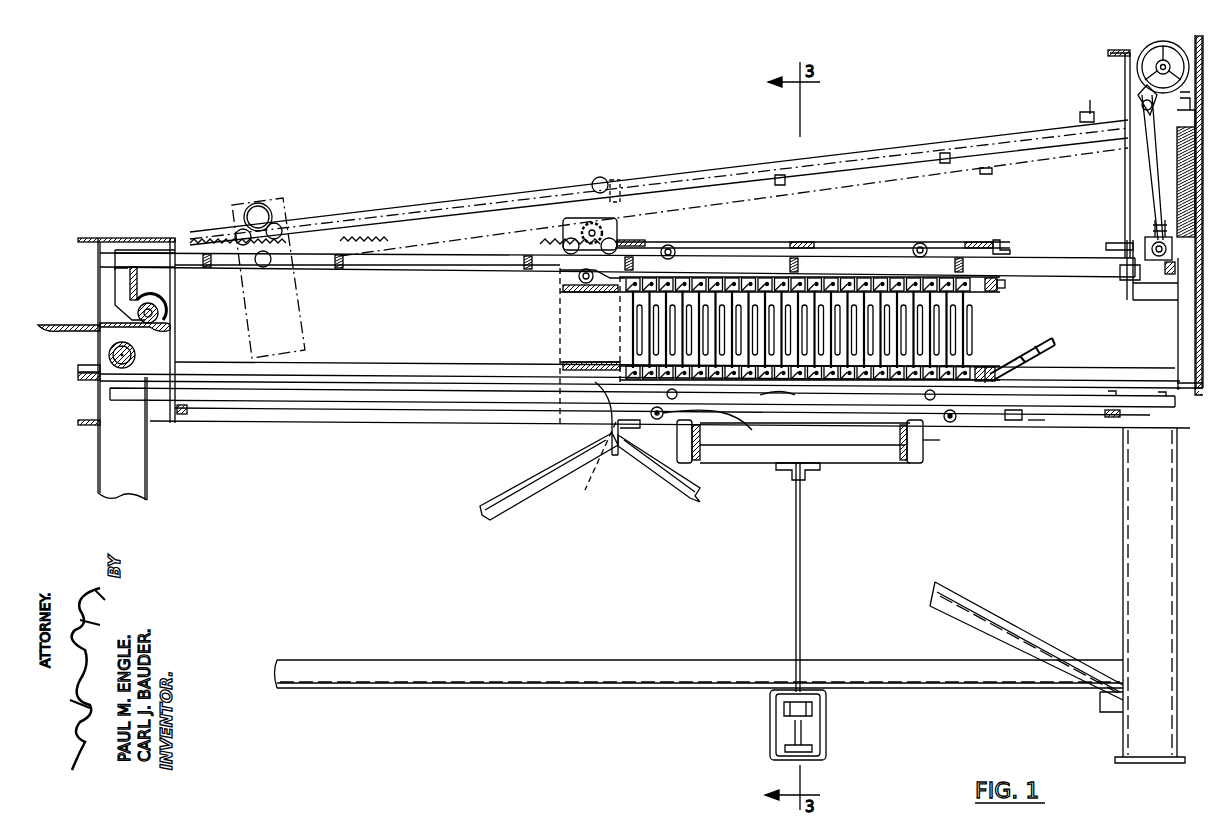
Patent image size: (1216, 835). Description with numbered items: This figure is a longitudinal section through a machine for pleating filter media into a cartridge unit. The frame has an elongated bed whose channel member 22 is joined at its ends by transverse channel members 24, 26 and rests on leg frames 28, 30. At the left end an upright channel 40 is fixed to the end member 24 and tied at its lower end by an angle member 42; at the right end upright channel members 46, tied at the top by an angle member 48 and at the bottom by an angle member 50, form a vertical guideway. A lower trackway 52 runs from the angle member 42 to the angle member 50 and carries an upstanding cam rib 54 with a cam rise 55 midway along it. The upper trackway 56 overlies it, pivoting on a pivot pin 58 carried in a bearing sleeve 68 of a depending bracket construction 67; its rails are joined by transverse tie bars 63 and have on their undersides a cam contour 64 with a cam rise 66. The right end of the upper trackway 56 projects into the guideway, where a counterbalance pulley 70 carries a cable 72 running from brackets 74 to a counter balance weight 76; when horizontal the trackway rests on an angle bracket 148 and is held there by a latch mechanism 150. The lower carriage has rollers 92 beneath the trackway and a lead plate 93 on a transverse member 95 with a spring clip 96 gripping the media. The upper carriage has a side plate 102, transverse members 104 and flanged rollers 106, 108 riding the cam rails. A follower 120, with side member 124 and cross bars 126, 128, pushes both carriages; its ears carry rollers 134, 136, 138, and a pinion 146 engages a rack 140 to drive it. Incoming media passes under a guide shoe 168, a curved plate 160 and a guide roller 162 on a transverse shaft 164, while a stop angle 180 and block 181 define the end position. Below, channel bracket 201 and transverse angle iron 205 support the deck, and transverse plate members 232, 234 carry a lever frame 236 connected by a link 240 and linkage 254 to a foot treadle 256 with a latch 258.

The channel member 22 is at (268, 418).
The transverse channel member 24 is at (96, 394).
The transverse channel member 26 is at (1178, 400).
The leg frame 28 is at (105, 460).
The leg frame 30 is at (1142, 555).
The upright channel 40 is at (135, 240).
The angle member 42 is at (184, 418).
The upright channel member 46 is at (1136, 173).
The angle member 48 is at (1118, 56).
The angle member 50 is at (1114, 418).
The lower trackway 52 is at (780, 408).
The cam rib 54 is at (1033, 396).
The cam rise 55 is at (607, 418).
The upper trackway 56 is at (1030, 268).
The pivot pin 58 is at (160, 310).
The transverse tie bar 63 is at (800, 262).
The cam contour 64 is at (520, 267).
The cam rise 66 is at (598, 290).
The depending bracket construction 67 is at (118, 278).
The bearing sleeve 68 is at (163, 298).
The pulley 70 is at (1152, 52).
The cable 72 is at (1148, 180).
The bracket 74 is at (1143, 243).
The counter balance weight 76 is at (1175, 213).
The roller 92 is at (715, 412).
The lead plate 93 is at (985, 372).
The transverse member 95 is at (982, 385).
The spring clip 96 is at (1050, 342).
The side plate 102 is at (942, 250).
The transverse member 104 is at (976, 245).
The flanged roller 106 is at (918, 245).
The flanged roller 108 is at (678, 250).
The follower 120 is at (572, 320).
The side member 124 is at (567, 355).
The upper cross bar 126 is at (598, 295).
The lower cross bar 128 is at (585, 362).
The roller 134 is at (618, 240).
The roller 136 is at (566, 243).
The roller 138 is at (578, 280).
The rack 140 is at (370, 243).
The pinion 146 is at (590, 222).
The angle bracket 148 is at (1152, 297).
The latch mechanism 150 is at (1130, 284).
The curved plate 160 is at (168, 328).
The guide roller 162 is at (112, 352).
The transverse shaft 164 is at (103, 364).
The guide shoe 168 is at (50, 322).
The stop angle 180 is at (992, 250).
The block 181 is at (1015, 415).
The channel bracket 201 is at (592, 445).
The transverse angle iron 205 is at (628, 428).
The transverse plate member 232 is at (683, 440).
The transverse plate member 234 is at (925, 435).
The lever frame 236 is at (880, 462).
The link 240 is at (698, 432).
The linkage 254 is at (802, 625).
The foot treadle 256 is at (818, 715).
The latch 258 is at (800, 737).